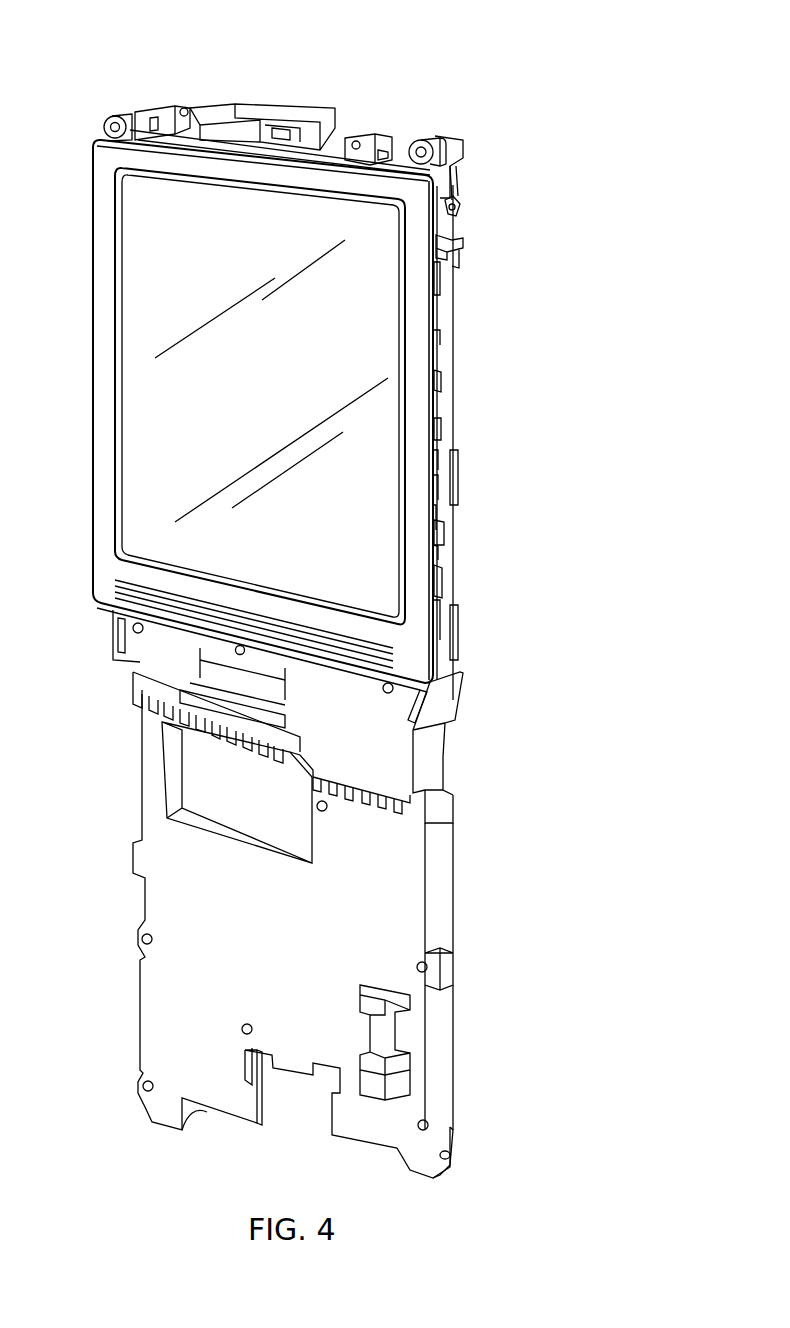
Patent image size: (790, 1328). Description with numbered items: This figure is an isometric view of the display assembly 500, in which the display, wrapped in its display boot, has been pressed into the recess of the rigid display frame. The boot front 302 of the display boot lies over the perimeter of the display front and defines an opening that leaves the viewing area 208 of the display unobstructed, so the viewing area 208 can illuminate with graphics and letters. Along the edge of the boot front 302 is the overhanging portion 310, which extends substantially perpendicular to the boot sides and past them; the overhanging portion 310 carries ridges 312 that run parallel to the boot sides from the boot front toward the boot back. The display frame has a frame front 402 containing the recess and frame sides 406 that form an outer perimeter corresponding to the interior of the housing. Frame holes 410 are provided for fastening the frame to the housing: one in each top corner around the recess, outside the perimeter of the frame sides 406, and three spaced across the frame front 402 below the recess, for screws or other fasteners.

The display assembly 500 is at (409, 60).
The boot front 302 is at (405, 623).
The viewing area 208 is at (375, 318).
The frame sides 406 is at (445, 430).
The ridges 312 is at (437, 470).
The overhanging portion 310 is at (427, 518).
The frame holes 410 is at (110, 122).
The frame front 402 is at (385, 762).